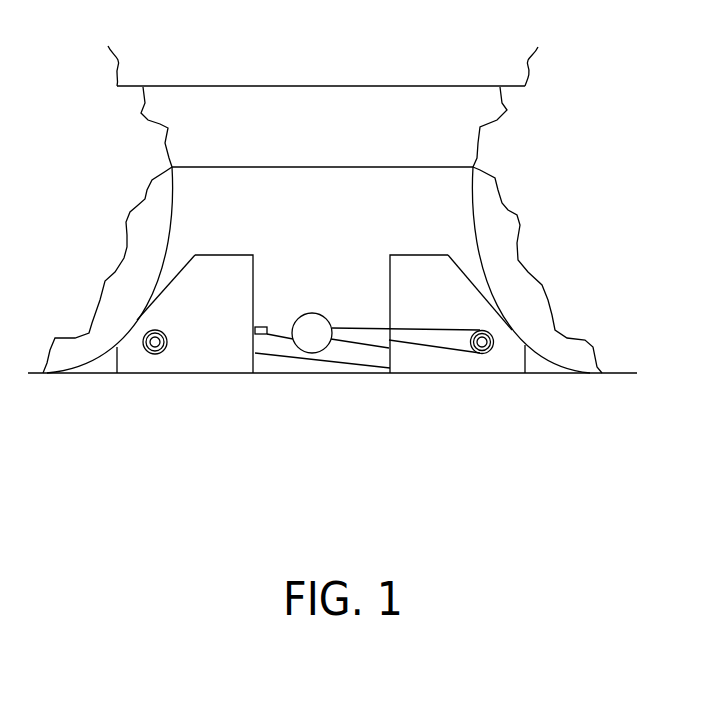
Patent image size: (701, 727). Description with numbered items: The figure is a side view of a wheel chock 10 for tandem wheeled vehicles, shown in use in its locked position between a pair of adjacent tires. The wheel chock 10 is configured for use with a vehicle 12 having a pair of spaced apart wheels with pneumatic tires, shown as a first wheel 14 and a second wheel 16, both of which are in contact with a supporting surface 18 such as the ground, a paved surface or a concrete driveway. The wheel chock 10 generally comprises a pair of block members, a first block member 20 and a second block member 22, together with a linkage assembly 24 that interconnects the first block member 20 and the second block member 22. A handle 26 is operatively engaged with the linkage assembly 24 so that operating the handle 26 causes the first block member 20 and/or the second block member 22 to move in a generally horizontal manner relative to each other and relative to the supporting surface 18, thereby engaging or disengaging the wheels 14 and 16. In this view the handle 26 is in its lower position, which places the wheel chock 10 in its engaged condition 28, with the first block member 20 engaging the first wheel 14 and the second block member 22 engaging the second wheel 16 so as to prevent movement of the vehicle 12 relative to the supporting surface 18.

The wheel chock 10 is at (272, 423).
The vehicle 12 is at (312, 123).
The first wheel 14 is at (533, 283).
The second wheel 16 is at (112, 283).
The supporting surface 18 is at (540, 384).
The first block member 20 is at (433, 363).
The second block member 22 is at (197, 363).
The linkage assembly 24 is at (340, 373).
The handle 26 is at (348, 312).
The engaged condition 28 is at (561, 170).